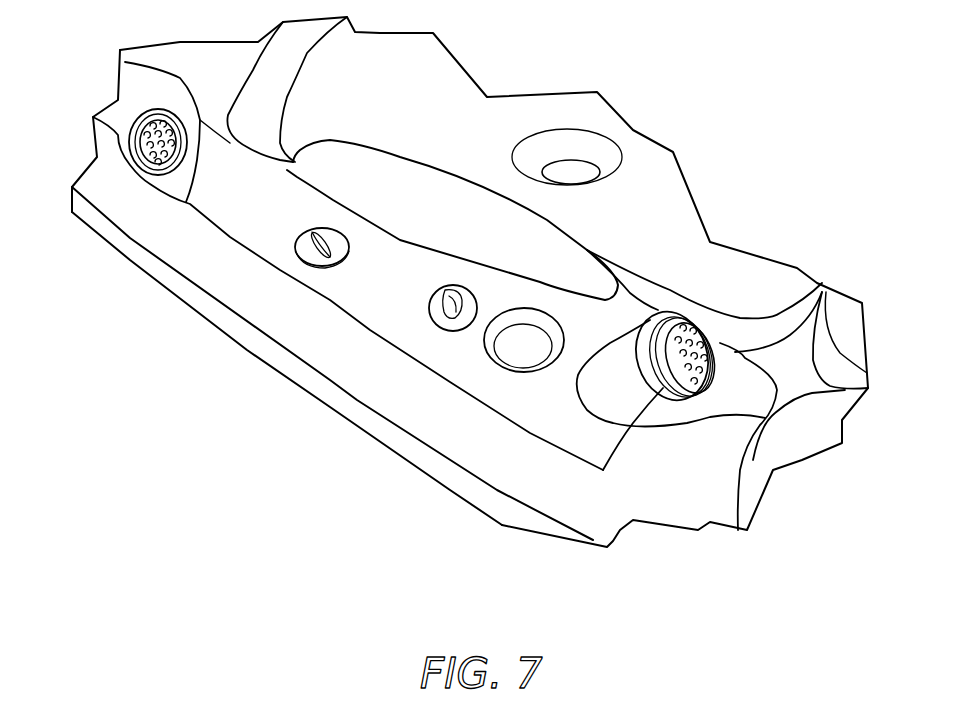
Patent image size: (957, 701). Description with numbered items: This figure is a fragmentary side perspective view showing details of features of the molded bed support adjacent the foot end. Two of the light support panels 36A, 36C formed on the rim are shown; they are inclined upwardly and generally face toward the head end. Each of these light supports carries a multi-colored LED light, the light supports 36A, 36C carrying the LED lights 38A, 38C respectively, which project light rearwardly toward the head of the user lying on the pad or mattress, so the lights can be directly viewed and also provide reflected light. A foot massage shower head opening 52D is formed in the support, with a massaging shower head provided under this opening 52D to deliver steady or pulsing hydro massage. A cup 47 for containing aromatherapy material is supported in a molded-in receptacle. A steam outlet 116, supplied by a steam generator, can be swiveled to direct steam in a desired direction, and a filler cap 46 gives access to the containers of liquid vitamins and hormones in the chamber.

The light support panel 36C is at (125, 133).
The multi-colored LED light 38C is at (163, 150).
The filler cap 46 is at (303, 255).
The steam outlet 116 is at (437, 315).
The cup 47 is at (527, 352).
The foot massage shower head opening 52D is at (583, 173).
The multi-colored LED light 38A is at (688, 385).
The light support panel 36A is at (603, 468).